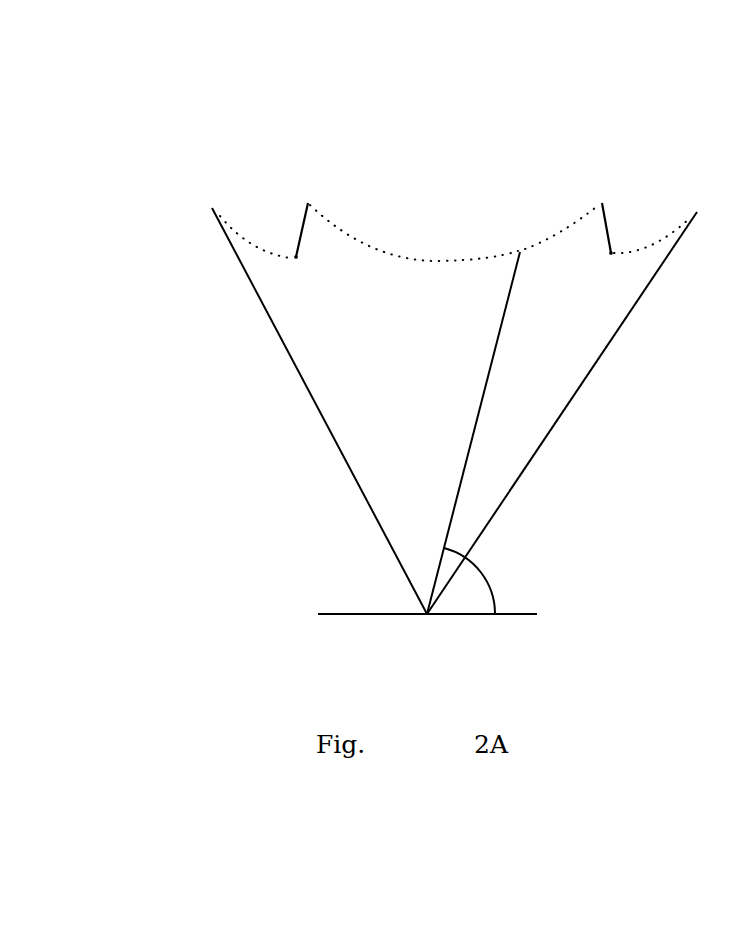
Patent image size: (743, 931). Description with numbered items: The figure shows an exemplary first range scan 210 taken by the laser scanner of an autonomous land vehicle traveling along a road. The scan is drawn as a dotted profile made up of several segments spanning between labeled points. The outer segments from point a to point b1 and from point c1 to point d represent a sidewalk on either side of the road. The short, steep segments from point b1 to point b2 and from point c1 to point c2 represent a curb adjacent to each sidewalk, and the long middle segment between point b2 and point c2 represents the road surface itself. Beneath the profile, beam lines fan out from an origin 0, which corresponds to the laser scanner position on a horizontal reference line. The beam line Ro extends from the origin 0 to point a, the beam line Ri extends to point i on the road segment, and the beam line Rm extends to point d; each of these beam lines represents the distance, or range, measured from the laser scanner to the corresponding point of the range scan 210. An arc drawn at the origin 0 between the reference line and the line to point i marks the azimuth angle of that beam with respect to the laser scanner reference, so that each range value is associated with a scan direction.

The first range scan 210 is at (456, 187).
The beam line Rm is at (319, 411).
The beam line Ri is at (477, 433).
The beam line R0 Ro is at (562, 413).
The origin O 0 is at (427, 631).
The point c2 is at (311, 216).
The point c1 is at (314, 275).
The point b2 is at (607, 212).
The point b1 is at (607, 278).
The point d is at (246, 218).
The point i is at (455, 232).
The point a is at (662, 216).